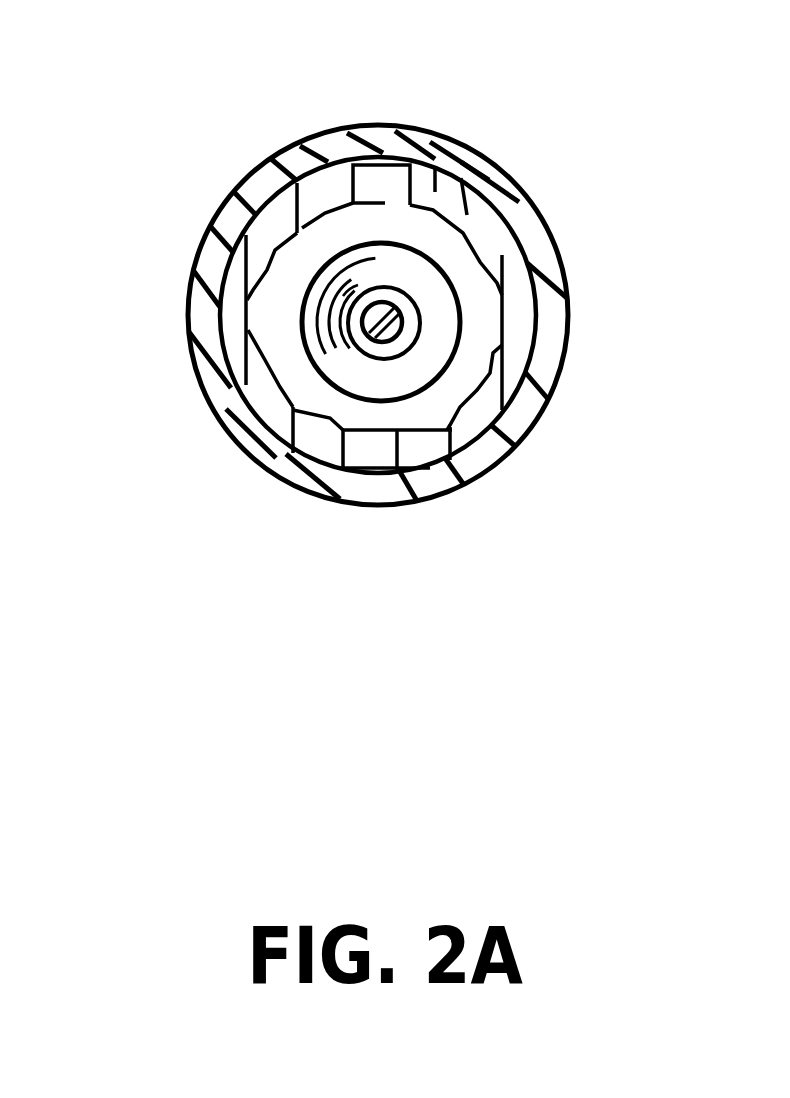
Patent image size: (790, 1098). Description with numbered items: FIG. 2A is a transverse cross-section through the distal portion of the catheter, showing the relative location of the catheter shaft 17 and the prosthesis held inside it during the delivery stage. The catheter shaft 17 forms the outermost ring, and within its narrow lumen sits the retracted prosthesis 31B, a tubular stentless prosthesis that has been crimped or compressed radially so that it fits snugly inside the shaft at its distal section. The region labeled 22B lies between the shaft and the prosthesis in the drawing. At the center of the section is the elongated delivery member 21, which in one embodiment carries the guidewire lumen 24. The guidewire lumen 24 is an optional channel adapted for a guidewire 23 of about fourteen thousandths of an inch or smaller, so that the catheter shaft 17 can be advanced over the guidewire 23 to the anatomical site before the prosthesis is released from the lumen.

The catheter shaft 17 is at (326, 128).
The retracted prosthesis 31B is at (452, 143).
The lobed insert 22B is at (298, 257).
The elongated delivery member 21 is at (435, 283).
The guidewire lumen 24 is at (360, 326).
The guidewire 23 is at (398, 321).